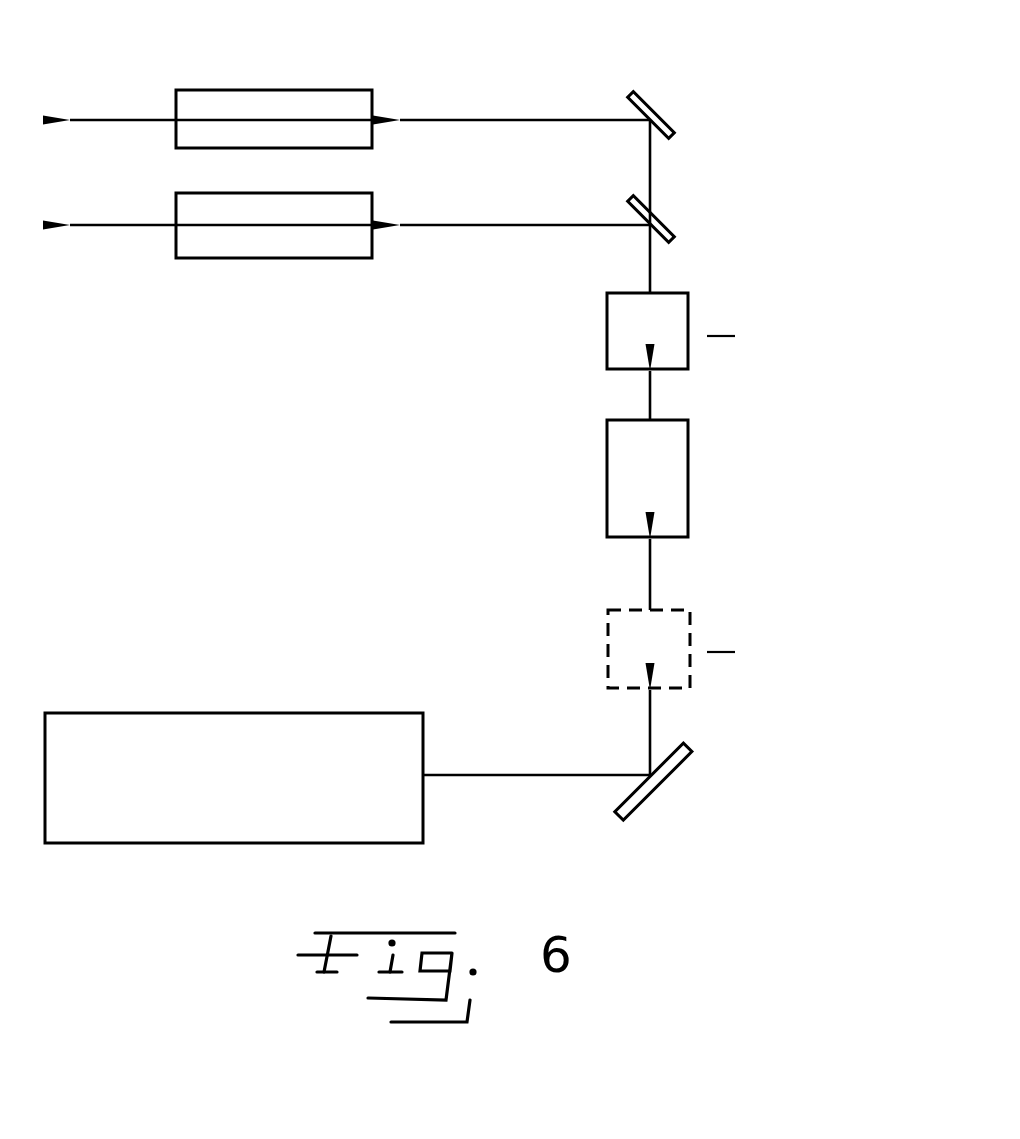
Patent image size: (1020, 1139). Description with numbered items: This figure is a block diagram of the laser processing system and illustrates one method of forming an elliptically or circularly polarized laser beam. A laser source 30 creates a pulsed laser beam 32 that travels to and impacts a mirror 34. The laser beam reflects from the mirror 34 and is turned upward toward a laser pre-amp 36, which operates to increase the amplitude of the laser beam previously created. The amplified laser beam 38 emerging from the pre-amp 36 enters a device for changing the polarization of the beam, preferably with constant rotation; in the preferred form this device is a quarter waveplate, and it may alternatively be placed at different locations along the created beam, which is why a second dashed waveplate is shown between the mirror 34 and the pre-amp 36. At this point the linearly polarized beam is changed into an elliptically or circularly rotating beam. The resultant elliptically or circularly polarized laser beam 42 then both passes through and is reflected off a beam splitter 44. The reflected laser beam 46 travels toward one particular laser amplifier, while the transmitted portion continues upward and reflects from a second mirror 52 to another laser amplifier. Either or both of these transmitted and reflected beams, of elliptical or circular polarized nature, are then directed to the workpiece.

The laser source 30 is at (218, 712).
The pulsed laser beam 32 is at (512, 778).
The mirror 34 is at (673, 772).
The laser pre-amp 36 is at (607, 465).
The amplified laser beam 38 is at (645, 405).
The elliptically or circularly polarized laser beam 42 is at (651, 266).
The beam splitter 44 is at (665, 227).
The reflected laser beam 46 is at (473, 228).
The second mirror 52 is at (651, 98).